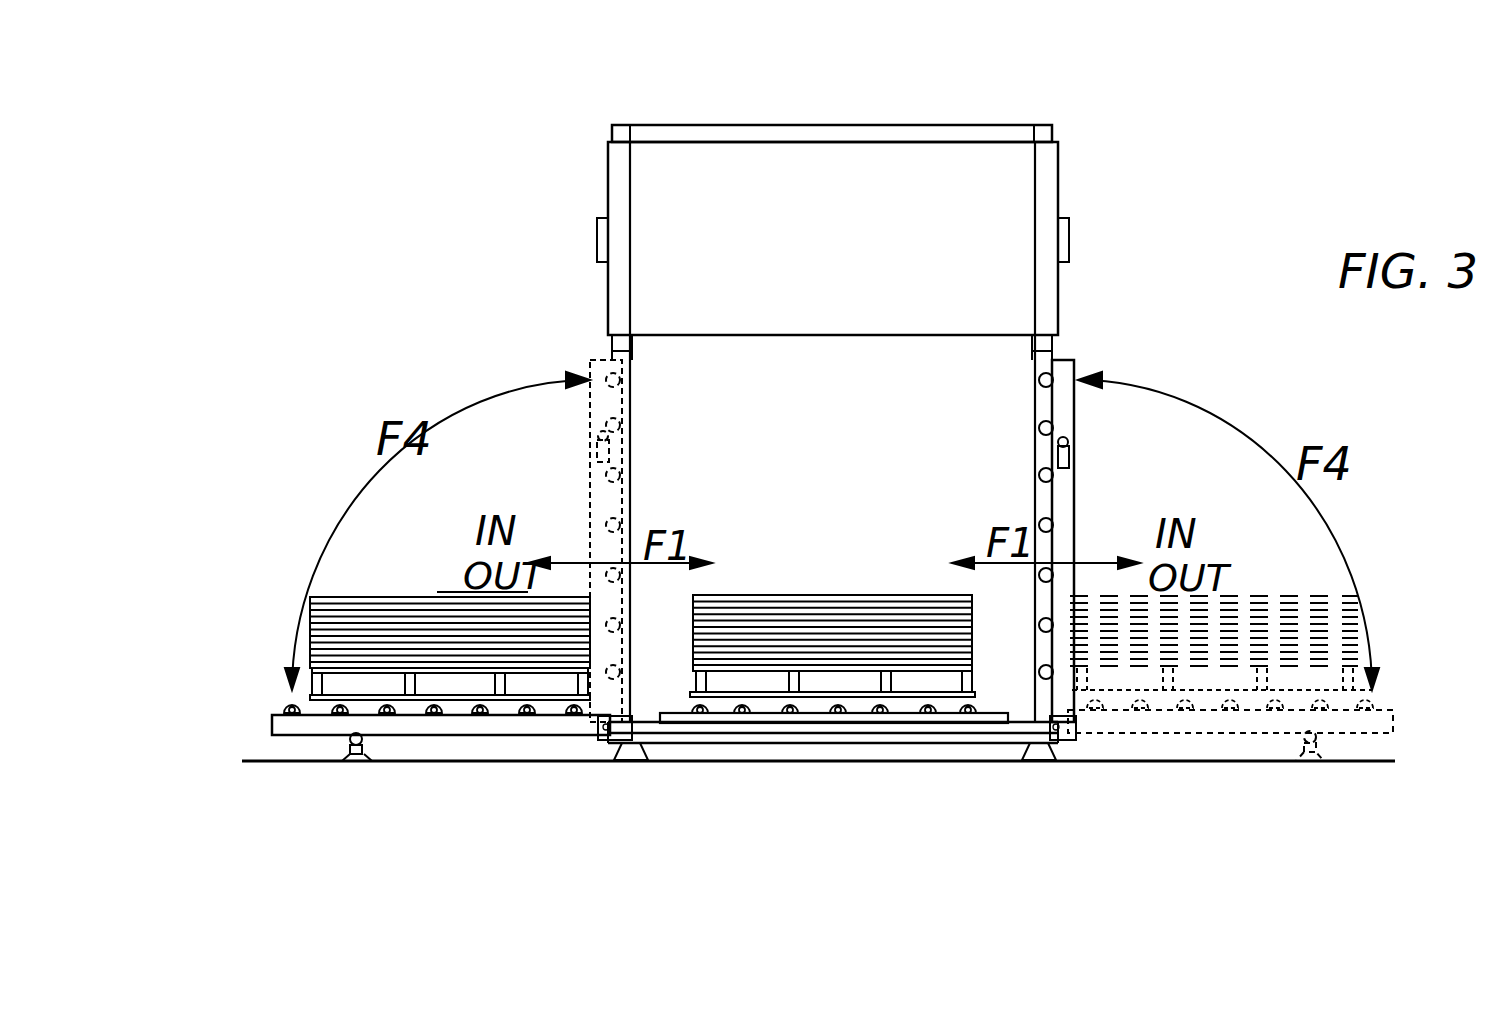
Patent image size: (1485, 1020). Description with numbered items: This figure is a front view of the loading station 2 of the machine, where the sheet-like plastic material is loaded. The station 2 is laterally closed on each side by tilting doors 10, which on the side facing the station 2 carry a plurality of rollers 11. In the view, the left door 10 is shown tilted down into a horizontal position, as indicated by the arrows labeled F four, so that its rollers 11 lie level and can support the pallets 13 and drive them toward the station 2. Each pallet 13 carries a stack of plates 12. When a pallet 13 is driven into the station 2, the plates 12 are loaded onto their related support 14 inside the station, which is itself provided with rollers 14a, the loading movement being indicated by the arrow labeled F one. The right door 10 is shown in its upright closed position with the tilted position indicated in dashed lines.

The sheet-like plastic material loading station 2 is at (925, 125).
The tilting door 10 is at (282, 723).
The rollers 11 is at (290, 703).
The plates 12 is at (360, 597).
The pallets 13 is at (362, 668).
The support 14 is at (728, 720).
The rollers 14a is at (775, 712).